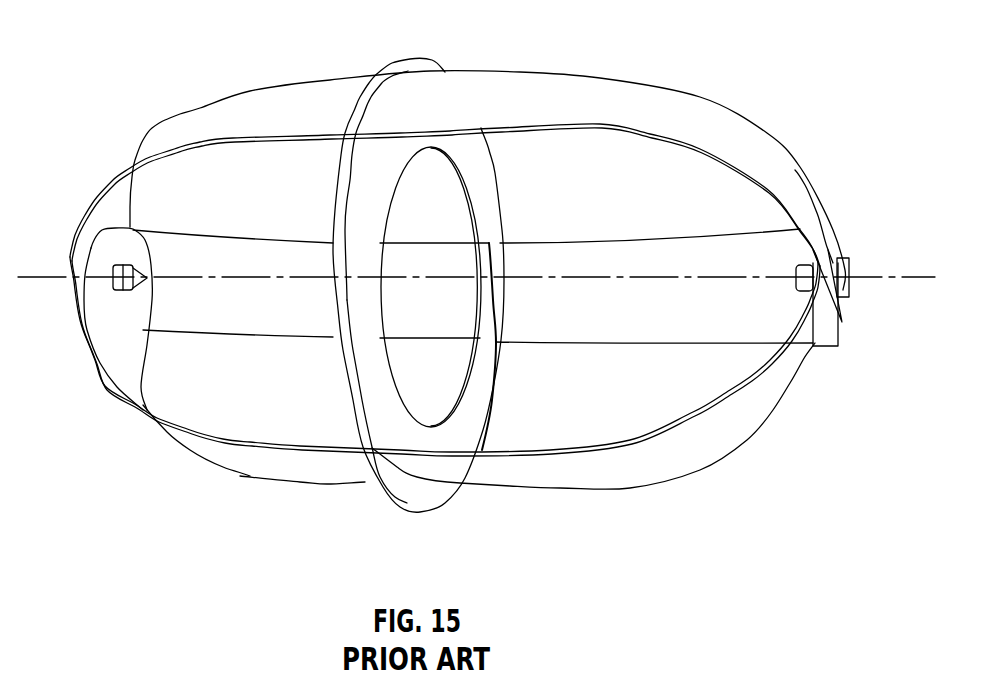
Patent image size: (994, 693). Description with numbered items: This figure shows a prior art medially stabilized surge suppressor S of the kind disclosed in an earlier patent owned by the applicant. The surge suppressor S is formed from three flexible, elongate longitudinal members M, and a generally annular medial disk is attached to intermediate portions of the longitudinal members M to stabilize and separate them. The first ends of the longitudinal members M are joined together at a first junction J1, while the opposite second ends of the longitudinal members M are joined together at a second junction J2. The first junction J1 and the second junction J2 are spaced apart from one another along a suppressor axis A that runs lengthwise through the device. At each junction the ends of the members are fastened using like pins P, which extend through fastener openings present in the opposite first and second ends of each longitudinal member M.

The surge suppressor S is at (150, 98).
The longitudinal members M is at (604, 78).
The suppressor axis A is at (33, 277).
The first junction J1 is at (128, 233).
The second junction J2 is at (840, 330).
The pins P is at (133, 290).